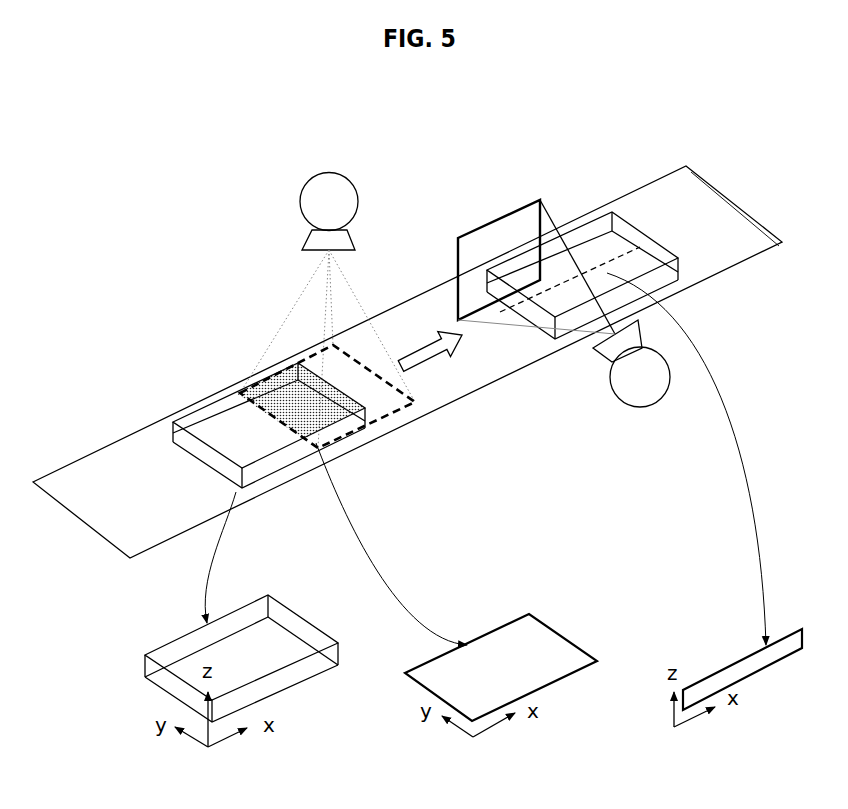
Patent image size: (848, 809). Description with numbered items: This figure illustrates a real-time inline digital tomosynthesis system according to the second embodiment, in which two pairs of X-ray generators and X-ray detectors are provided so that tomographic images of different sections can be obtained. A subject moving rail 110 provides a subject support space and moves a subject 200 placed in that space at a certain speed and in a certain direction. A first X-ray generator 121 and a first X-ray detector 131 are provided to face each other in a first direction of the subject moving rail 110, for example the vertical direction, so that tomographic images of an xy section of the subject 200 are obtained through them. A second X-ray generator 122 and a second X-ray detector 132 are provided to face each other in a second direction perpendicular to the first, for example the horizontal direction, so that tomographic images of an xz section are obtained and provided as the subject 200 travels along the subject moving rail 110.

The subject moving rail 110 is at (655, 188).
The first X-ray generator 121 is at (329, 172).
The second X-ray generator 122 is at (641, 400).
The subject 200 is at (207, 410).
The first X-ray detector 131 is at (368, 420).
The second X-ray detector 132 is at (495, 218).